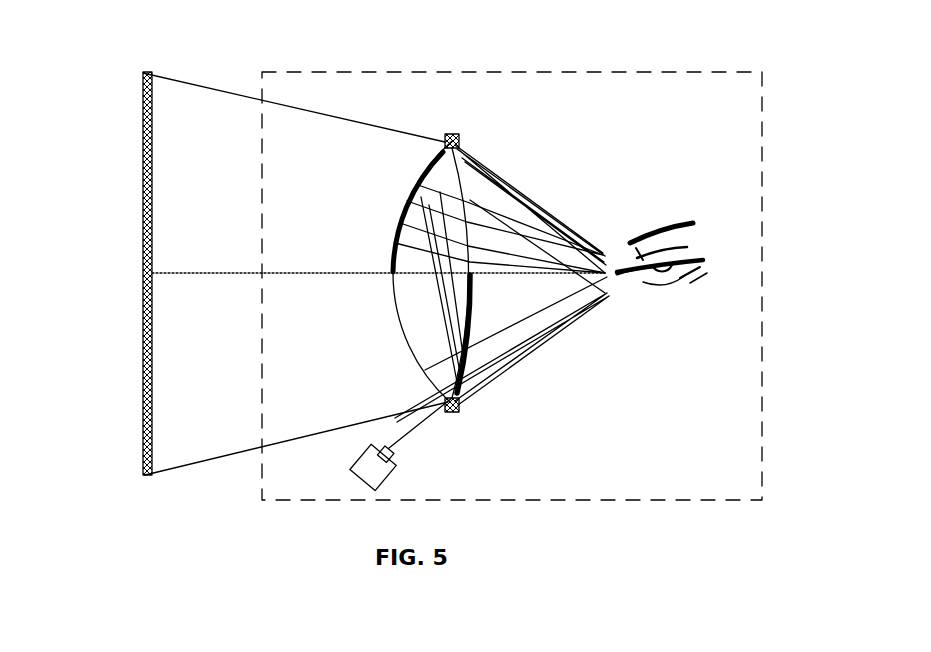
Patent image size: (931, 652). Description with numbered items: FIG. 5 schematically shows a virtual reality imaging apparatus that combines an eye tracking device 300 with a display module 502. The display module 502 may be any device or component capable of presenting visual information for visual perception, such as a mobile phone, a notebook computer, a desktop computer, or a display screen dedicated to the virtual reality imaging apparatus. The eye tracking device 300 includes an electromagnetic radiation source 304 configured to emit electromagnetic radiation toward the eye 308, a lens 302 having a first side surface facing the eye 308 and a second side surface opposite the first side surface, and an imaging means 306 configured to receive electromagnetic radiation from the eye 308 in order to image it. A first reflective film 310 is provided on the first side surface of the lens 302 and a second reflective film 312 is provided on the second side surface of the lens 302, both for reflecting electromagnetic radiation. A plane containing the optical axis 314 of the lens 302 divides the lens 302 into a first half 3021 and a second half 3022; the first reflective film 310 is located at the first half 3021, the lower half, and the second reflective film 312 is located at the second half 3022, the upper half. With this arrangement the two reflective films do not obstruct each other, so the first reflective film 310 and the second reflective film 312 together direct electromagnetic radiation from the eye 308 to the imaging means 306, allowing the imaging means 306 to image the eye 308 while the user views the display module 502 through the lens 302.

The eye tracking device 300 is at (652, 72).
The lens 302 is at (430, 330).
The electromagnetic radiation source 304 is at (456, 134).
The imaging means 306 is at (390, 480).
The eye 308 is at (707, 275).
The first reflective film 310 is at (473, 312).
The second reflective film 312 is at (400, 194).
The optical axis 314 is at (193, 272).
The display module 502 is at (143, 157).
The first half 3021 is at (447, 373).
The second half 3022 is at (445, 175).